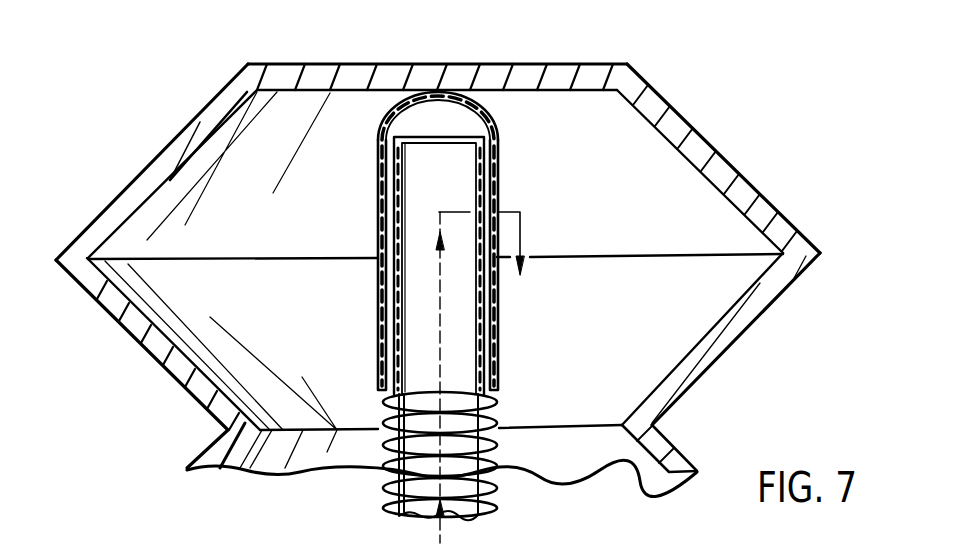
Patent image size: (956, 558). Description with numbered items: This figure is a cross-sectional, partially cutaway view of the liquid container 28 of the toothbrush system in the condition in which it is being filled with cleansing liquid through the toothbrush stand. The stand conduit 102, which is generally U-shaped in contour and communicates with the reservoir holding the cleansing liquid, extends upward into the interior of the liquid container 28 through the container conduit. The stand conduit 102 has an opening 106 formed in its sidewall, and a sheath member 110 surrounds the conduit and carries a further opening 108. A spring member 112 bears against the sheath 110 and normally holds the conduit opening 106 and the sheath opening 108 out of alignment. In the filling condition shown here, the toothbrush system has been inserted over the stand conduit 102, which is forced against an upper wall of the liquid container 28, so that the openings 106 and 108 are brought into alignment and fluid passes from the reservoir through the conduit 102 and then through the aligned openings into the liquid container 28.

The liquid container 28 is at (745, 172).
The stand conduit 102 is at (492, 516).
The opening 106 is at (476, 197).
The opening 108 is at (498, 198).
The sheath member 110 is at (377, 203).
The spring member 112 is at (500, 410).